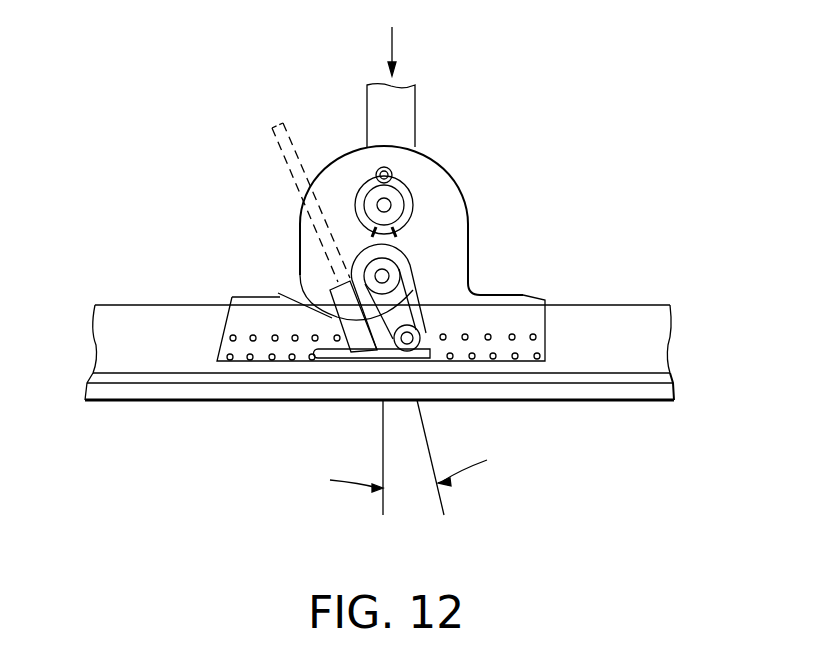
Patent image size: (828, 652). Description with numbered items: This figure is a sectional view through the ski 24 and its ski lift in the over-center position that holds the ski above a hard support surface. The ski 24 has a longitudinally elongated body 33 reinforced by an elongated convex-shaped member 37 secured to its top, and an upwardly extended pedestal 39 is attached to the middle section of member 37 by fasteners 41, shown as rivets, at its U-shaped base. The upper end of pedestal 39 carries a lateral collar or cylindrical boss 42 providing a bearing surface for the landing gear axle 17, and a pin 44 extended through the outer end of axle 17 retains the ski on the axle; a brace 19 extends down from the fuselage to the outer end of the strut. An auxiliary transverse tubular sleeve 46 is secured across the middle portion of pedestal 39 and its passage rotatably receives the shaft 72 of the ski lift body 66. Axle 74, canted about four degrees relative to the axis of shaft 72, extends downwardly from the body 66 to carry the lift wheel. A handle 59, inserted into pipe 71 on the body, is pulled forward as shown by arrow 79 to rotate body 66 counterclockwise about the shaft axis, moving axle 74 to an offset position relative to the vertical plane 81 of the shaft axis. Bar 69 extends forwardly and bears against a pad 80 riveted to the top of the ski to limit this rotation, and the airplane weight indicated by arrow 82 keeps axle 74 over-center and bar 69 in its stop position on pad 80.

The ski 24 is at (88, 302).
The convex-shaped member 37 is at (160, 317).
The longitudinally elongated body 33 is at (122, 390).
The fasteners 41 is at (528, 337).
The auxiliary transverse tubular sleeve 46 is at (280, 295).
The pedestal 39 is at (455, 243).
The brace 19 is at (406, 122).
The arrow indicating weight of the airplane 82 is at (397, 38).
The axle 17 is at (384, 205).
The pin 44 is at (377, 173).
The lateral collar or cylindrical boss 42 is at (358, 188).
The handle 59 is at (291, 172).
The arrow 79 is at (262, 138).
The pipe 71 is at (300, 280).
The shaft 72 is at (383, 277).
The body 66 is at (413, 290).
The axle 74 is at (407, 340).
The bar 80 is at (310, 373).
The bar 69 is at (352, 352).
The vertical plane 81 is at (383, 503).